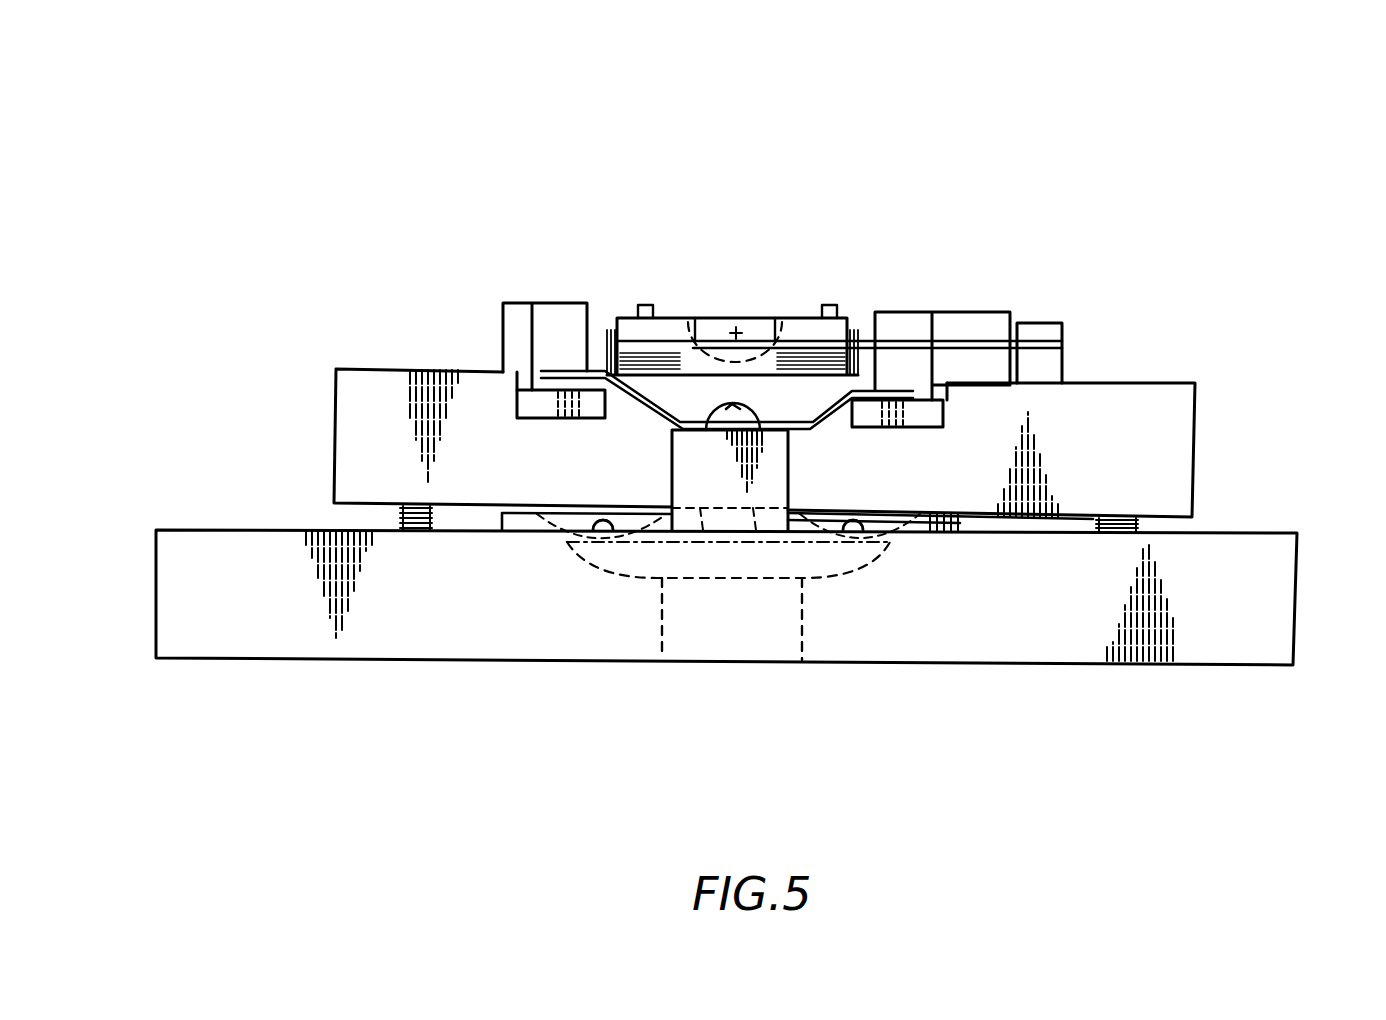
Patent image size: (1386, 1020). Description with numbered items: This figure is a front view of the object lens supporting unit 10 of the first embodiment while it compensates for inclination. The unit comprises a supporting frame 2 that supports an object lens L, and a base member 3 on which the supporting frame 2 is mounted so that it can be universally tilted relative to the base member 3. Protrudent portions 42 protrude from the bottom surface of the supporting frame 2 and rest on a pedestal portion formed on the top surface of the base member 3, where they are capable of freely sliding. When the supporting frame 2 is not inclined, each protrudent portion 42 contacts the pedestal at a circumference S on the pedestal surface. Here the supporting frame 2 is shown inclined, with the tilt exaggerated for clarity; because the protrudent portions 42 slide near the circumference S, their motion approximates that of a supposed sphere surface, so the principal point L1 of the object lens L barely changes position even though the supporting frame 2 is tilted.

The object lens supporting unit 10 is at (1175, 207).
The supporting frame 2 is at (350, 400).
The base member 3 is at (260, 643).
The protrudent portions 42 is at (605, 522).
The circumference S is at (672, 543).
The object lens L is at (689, 317).
The principal point L1 is at (750, 317).